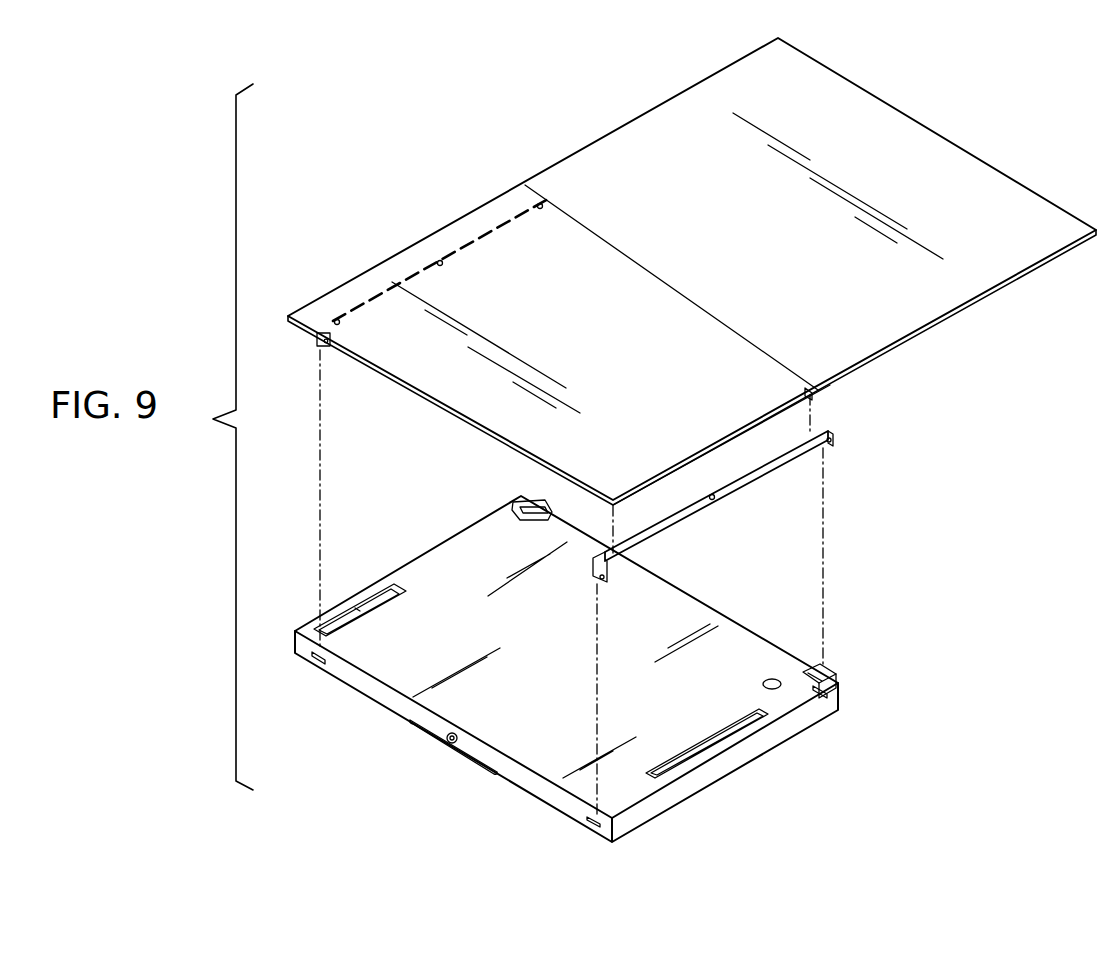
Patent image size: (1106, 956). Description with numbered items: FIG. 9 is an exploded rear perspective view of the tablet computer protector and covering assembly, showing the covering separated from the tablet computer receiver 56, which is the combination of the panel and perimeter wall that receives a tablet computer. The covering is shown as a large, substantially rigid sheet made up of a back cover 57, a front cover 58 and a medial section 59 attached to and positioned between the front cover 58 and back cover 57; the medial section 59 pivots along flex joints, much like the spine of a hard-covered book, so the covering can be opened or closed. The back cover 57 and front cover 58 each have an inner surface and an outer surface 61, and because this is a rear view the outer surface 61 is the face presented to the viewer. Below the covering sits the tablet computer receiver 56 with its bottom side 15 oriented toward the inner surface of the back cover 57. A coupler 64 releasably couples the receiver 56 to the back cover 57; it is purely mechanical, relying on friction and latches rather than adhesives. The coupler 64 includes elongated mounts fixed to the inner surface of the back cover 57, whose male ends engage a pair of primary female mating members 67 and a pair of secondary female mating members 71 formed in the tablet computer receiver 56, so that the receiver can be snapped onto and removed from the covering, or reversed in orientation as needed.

The bottom side 15 is at (386, 653).
The tablet computer receiver 56 is at (838, 712).
The back cover 57 is at (824, 391).
The front cover 58 is at (968, 302).
The medial section 59 is at (572, 197).
The outer surface 61 is at (502, 272).
The coupler 64 is at (797, 460).
The primary female mating member 67 is at (586, 822).
The secondary female mating member 71 is at (520, 518).